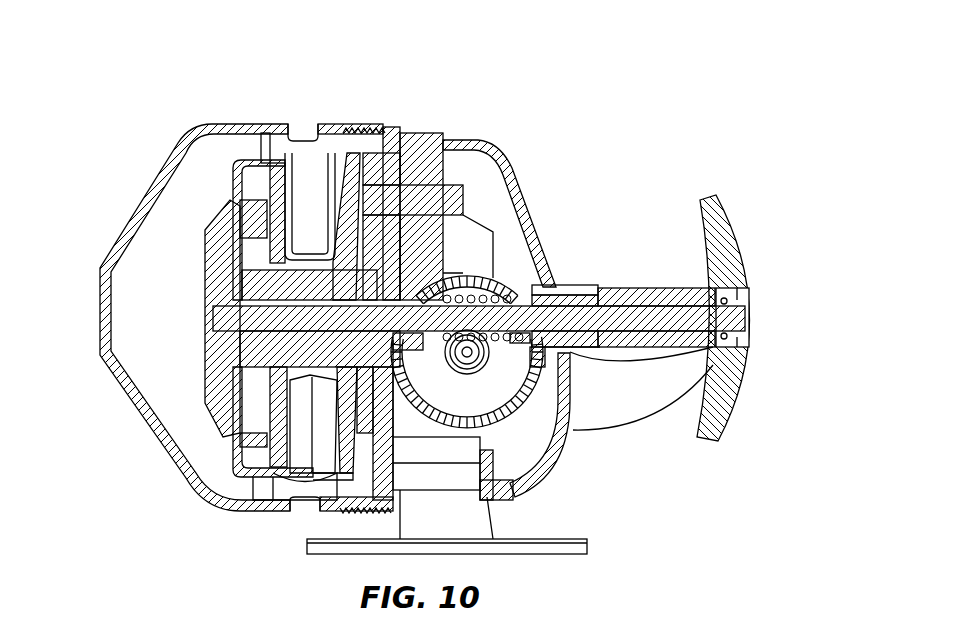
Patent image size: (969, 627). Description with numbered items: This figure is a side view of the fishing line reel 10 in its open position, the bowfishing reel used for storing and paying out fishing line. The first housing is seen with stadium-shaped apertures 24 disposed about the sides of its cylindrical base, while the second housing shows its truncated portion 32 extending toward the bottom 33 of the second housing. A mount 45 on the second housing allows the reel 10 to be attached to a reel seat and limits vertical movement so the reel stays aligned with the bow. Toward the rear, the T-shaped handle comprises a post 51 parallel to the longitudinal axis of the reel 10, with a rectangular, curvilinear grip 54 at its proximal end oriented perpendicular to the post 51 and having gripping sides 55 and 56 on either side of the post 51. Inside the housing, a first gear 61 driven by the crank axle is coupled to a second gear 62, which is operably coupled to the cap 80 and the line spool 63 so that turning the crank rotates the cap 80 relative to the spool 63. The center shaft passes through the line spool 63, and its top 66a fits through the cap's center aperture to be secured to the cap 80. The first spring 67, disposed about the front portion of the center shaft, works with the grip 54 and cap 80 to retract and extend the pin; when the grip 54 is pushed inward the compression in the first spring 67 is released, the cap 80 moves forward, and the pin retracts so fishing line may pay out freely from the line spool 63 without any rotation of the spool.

The fishing line reel 10 is at (672, 117).
The stadium-shaped aperture 24 is at (303, 130).
The truncated portion 32 is at (537, 220).
The bottom of the second housing 33 is at (567, 433).
The mount 45 is at (500, 517).
The post 51 is at (653, 284).
The grip 54 is at (748, 297).
The gripping side 55 is at (727, 194).
The gripping side 56 is at (727, 418).
The first gear 61 is at (497, 288).
The second gear 62 is at (432, 280).
The line spool 63 is at (277, 127).
The top of center shaft 66a is at (192, 310).
The first spring 67 is at (217, 217).
The cap 80 is at (223, 417).